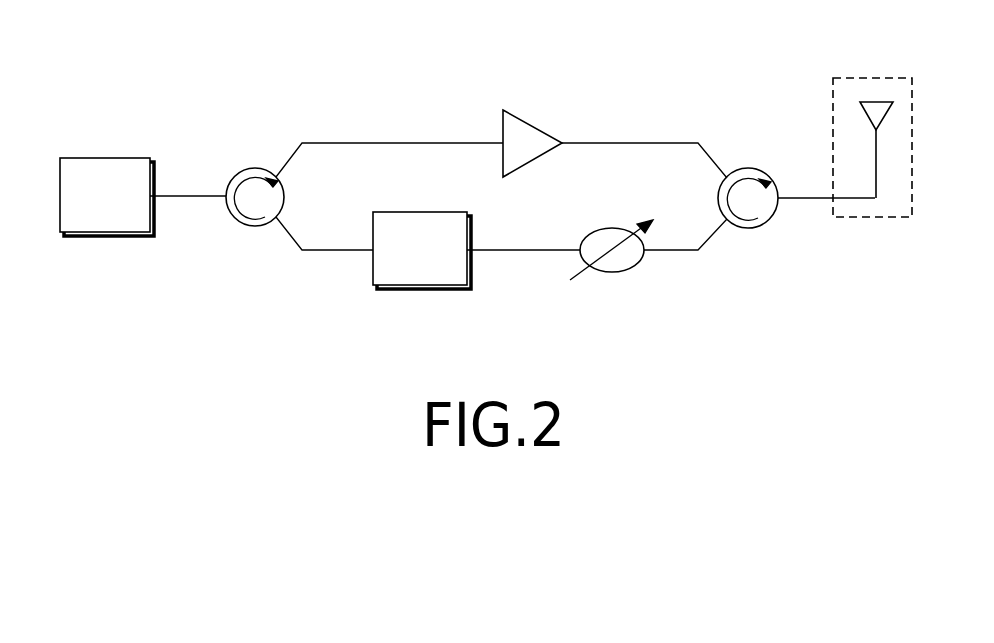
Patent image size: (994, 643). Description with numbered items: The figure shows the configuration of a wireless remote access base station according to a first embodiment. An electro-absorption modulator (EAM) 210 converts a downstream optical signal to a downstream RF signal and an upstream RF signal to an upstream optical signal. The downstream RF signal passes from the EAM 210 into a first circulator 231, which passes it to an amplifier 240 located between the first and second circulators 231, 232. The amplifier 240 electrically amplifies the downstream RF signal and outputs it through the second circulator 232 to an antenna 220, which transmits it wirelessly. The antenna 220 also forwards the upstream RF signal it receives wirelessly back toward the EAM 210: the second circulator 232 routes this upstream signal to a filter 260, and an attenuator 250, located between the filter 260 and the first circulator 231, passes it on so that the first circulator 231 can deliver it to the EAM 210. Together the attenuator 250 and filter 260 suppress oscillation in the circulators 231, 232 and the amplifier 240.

The electro-absorption modulator (EAM) 210 is at (103, 157).
The antenna 220 is at (870, 78).
The first circulator 231 is at (252, 167).
The second circulator 232 is at (748, 168).
The amplifier 240 is at (528, 126).
The attenuator 250 is at (417, 212).
The filter 260 is at (609, 228).